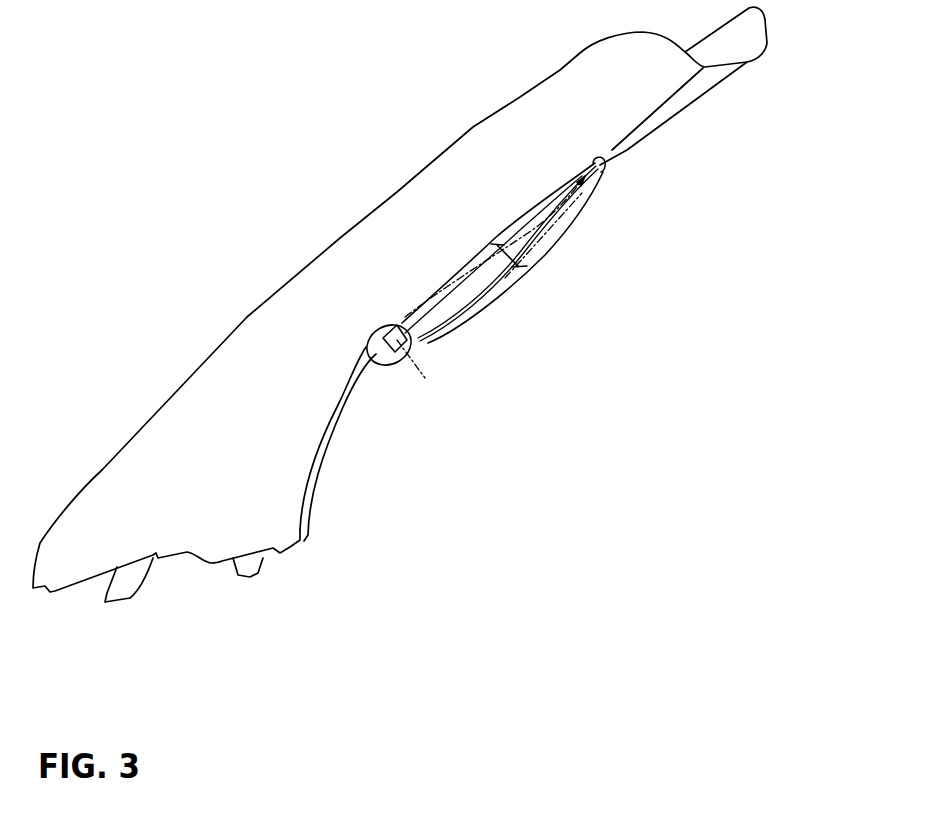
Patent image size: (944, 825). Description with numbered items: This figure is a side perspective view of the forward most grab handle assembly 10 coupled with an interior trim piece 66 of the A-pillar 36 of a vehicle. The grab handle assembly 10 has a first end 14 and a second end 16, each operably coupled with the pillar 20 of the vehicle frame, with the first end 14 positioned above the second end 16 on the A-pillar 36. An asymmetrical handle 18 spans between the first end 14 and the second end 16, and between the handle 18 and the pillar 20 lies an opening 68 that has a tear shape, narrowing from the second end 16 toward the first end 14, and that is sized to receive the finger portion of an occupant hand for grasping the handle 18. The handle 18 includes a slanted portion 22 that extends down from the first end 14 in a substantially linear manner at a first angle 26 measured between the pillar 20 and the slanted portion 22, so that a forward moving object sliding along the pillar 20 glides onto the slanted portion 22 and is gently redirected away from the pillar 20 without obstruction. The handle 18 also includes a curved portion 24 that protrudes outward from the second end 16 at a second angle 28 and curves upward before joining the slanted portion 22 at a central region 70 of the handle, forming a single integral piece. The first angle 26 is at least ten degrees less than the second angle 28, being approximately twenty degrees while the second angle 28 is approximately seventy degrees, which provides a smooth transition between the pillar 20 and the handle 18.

The grab handle assembly 10 is at (561, 284).
The first end 14 is at (595, 163).
The second end 16 is at (378, 351).
The asymmetrical handle 18 is at (492, 304).
The pillar 20 is at (400, 304).
The slanted portion 22 is at (556, 238).
The curved portion 24 is at (433, 343).
The first angle 26 is at (505, 266).
The second angle 28 is at (413, 343).
The A-pillar 36 is at (400, 304).
The interior trim piece 66 is at (283, 328).
The opening 68 is at (482, 282).
The central region 70 is at (450, 301).